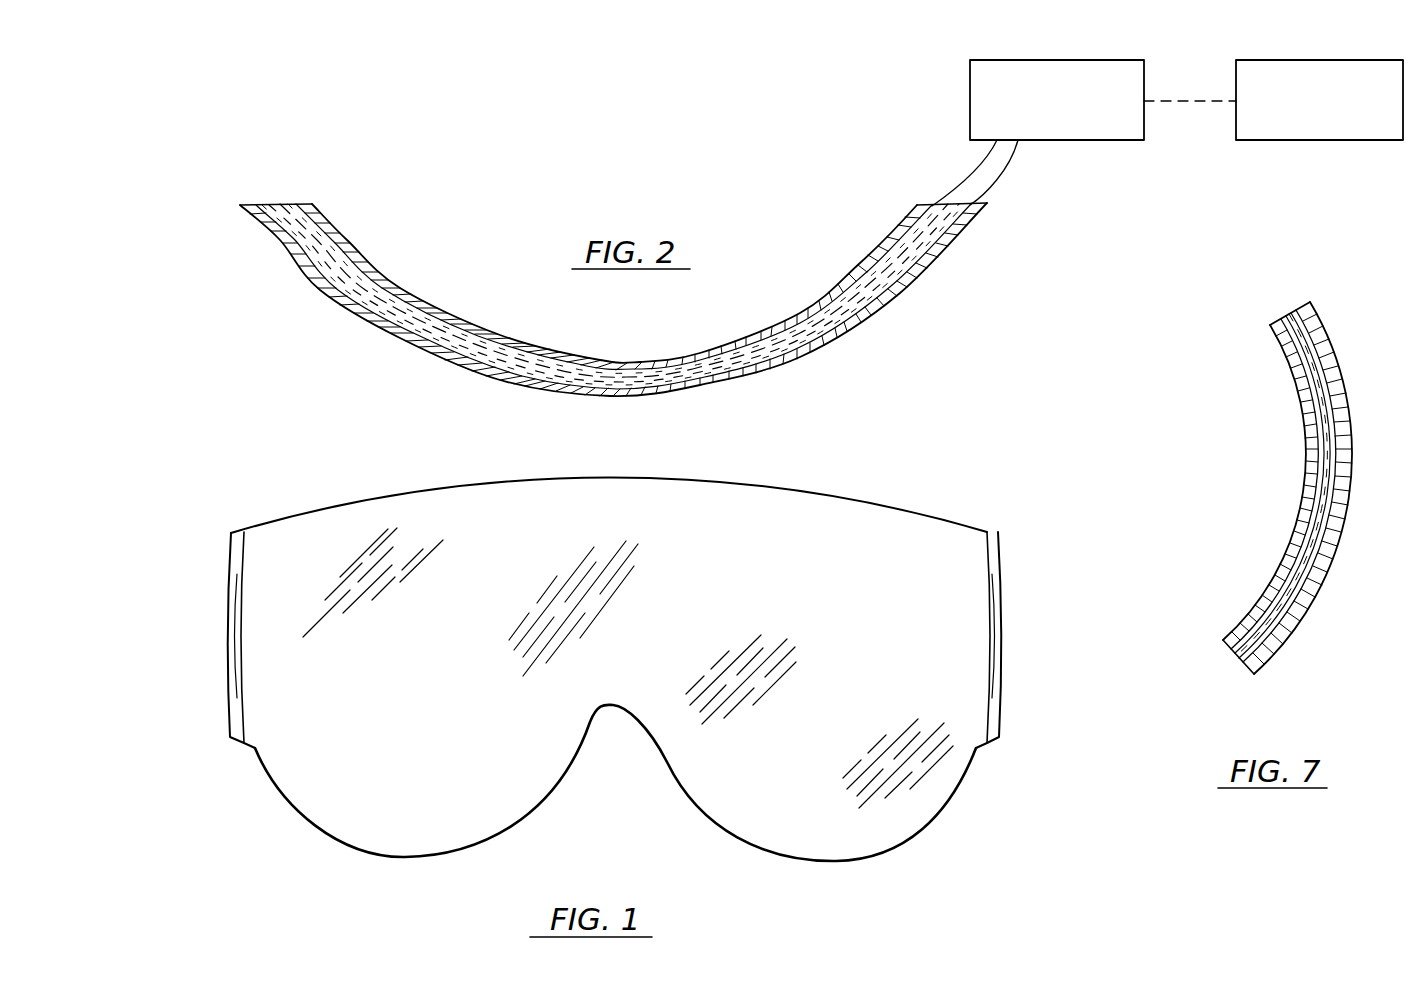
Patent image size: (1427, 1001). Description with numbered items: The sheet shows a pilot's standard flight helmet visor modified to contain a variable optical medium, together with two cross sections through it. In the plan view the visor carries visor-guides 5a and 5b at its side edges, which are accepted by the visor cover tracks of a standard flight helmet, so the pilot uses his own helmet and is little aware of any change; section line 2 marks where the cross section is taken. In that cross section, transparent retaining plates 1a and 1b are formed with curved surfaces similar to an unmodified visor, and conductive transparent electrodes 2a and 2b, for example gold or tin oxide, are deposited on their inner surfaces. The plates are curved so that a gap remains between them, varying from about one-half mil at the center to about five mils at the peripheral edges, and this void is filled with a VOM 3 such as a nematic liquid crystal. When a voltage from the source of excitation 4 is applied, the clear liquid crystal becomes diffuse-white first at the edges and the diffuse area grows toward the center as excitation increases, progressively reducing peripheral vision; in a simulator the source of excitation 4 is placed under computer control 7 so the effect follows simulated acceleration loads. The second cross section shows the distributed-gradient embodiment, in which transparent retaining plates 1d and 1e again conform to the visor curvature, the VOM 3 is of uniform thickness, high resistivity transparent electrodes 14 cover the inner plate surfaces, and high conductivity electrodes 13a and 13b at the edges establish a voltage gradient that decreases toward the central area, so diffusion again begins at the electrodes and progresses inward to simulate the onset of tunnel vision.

In FIG. 2, the transparent retaining plate 1a is at (242, 205).
In FIG. 2, the transparent retaining plate 1b is at (304, 203).
In FIG. 2, the VOM 3 is at (276, 212).
In FIG. 7, the VOM 3 is at (1240, 660).
In FIG. 2, the conductive transparent electrode 2a is at (968, 206).
In FIG. 2, the conductive transparent electrode 2b is at (933, 206).
In FIG. 2, the source of excitation 4 is at (1113, 140).
In FIG. 2, the computer control 7 is at (1352, 140).
In FIG. 1, the computer control 7 is at (798, 556).
In FIG. 1, the visor-guide 5a is at (231, 612).
In FIG. 1, the visor-guide 5b is at (999, 612).
In FIG. 1, the section line 2- 2 is at (398, 628).
In FIG. 7, the high conductivity electrode 13a is at (1285, 318).
In FIG. 7, the high conductivity electrode 13b is at (1295, 310).
In FIG. 7, the high resistivity transparent electrodes 14 is at (1322, 460).
In FIG. 7, the transparent retaining plate 1d is at (1263, 607).
In FIG. 7, the transparent retaining plate 1e is at (1305, 605).